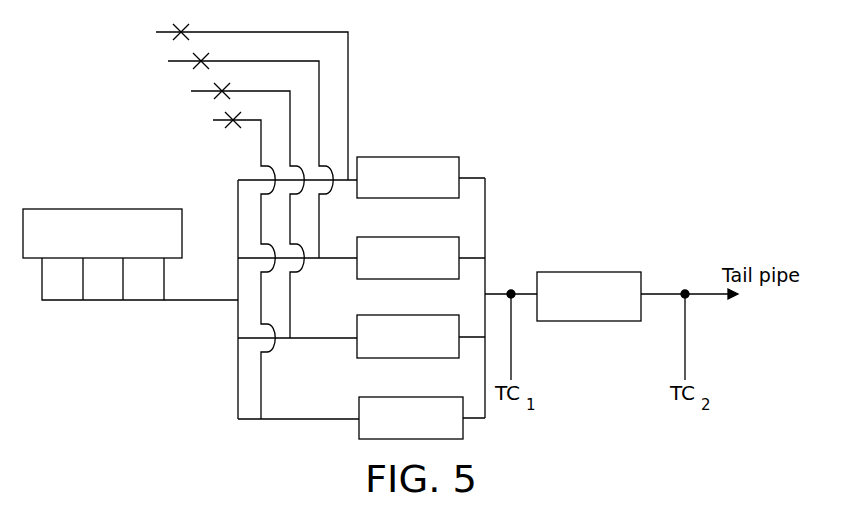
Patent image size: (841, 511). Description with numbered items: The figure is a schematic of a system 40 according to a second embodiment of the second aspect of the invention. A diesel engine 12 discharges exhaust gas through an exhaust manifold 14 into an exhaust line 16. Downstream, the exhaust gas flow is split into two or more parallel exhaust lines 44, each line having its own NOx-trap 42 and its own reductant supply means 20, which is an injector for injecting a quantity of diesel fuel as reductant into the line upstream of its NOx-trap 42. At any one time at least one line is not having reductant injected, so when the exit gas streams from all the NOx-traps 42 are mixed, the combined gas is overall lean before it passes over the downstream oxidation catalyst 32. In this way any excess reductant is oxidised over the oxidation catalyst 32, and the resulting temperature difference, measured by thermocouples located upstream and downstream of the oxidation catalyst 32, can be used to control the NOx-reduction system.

The diesel engine 12 is at (101, 209).
The exhaust manifold 14 is at (103, 300).
The exhaust line 16 is at (172, 300).
The reductant supply means 20 is at (157, 33).
The oxidation catalyst 32 is at (589, 272).
The system 40 is at (337, 315).
The NOx-trap 42 is at (447, 298).
The parallel exhaust lines 44 is at (238, 192).